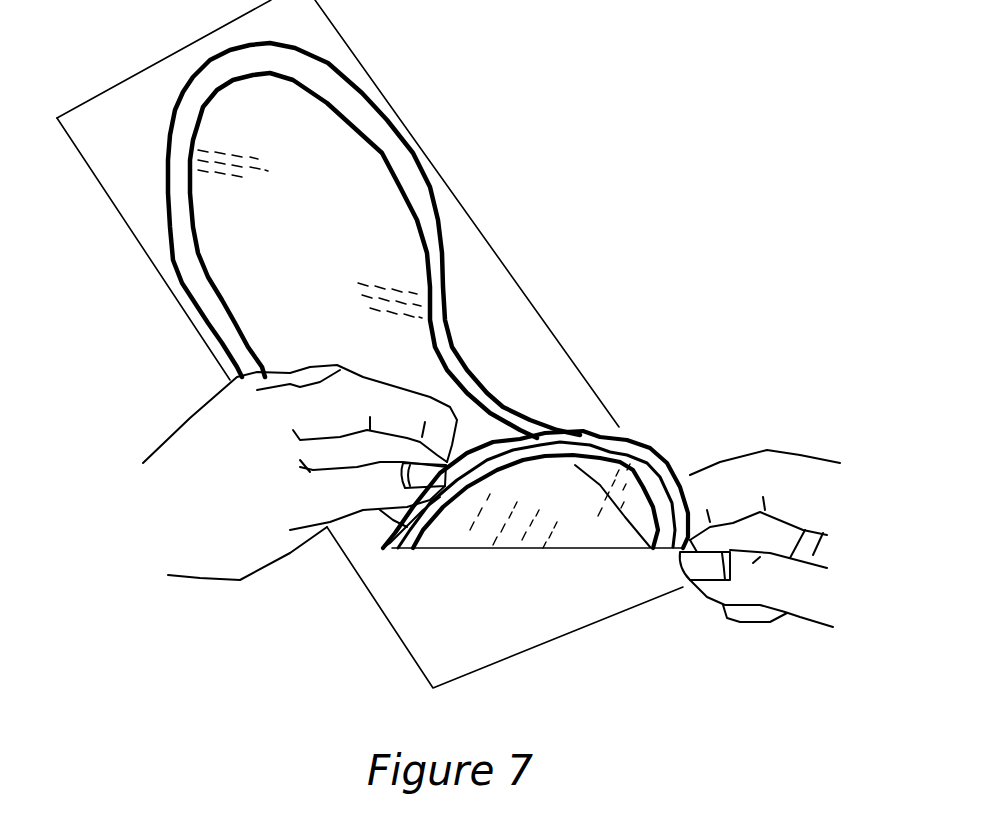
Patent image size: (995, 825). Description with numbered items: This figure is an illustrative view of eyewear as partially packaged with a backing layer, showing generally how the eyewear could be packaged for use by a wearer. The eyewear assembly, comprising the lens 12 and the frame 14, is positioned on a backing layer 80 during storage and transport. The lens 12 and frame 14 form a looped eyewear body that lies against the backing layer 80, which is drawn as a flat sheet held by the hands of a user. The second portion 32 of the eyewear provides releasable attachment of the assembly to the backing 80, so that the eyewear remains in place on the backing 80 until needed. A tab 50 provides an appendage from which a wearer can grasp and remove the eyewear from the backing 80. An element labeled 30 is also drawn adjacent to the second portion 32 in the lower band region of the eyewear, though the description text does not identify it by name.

The lens 12 is at (323, 153).
The frame 14 is at (420, 200).
The backing layer 80 is at (480, 277).
The tab 50 is at (493, 455).
The second portion 32 is at (640, 446).
The band inner edge 30 is at (640, 447).